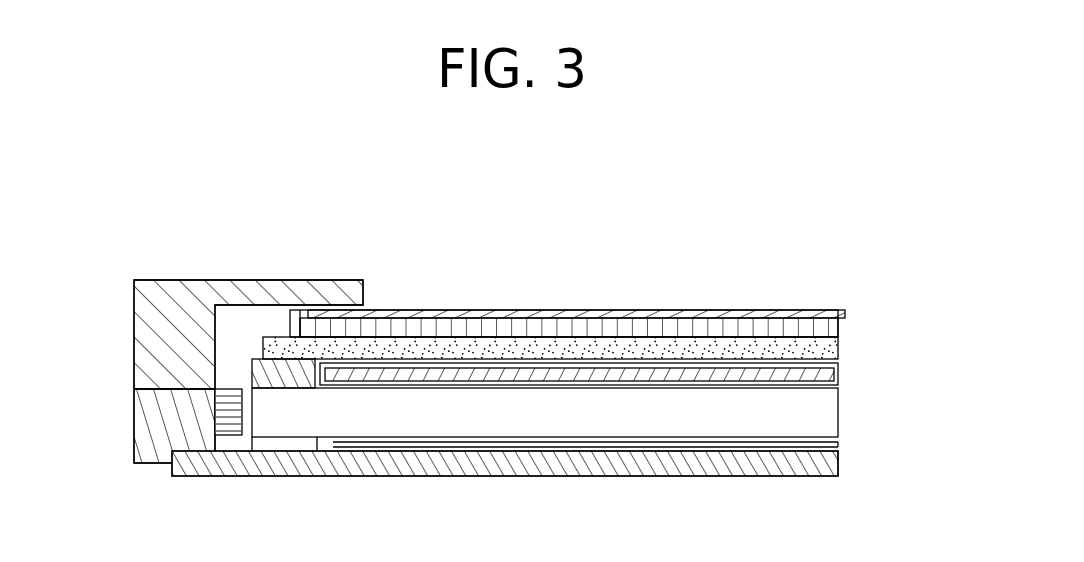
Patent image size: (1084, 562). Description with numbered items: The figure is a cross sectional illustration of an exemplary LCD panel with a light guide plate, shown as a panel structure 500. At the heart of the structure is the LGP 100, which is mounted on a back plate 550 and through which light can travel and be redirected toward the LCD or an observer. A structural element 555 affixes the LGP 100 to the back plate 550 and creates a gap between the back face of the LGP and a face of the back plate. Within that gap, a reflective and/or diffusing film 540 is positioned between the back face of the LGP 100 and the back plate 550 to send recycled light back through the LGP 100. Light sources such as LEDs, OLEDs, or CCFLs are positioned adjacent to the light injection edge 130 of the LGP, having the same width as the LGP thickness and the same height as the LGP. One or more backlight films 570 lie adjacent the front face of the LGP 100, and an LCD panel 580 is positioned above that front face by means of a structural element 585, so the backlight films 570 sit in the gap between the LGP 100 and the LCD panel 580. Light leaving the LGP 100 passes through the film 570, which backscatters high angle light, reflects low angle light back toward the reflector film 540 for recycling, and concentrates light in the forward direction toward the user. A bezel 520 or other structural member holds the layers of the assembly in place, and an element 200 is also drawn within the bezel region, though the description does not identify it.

The panel structure 500 is at (420, 208).
The bezel 520 is at (185, 302).
The driving circuit element 200 is at (231, 422).
The LCD panel 580 is at (838, 348).
The structural element 585 is at (277, 377).
The backlight film 570 is at (823, 378).
The LGP 100 is at (797, 417).
The structural element 555 is at (273, 443).
The reflective and/or diffusing film 540 is at (778, 456).
The back plate 550 is at (597, 463).
The light injection edge 130 is at (266, 412).